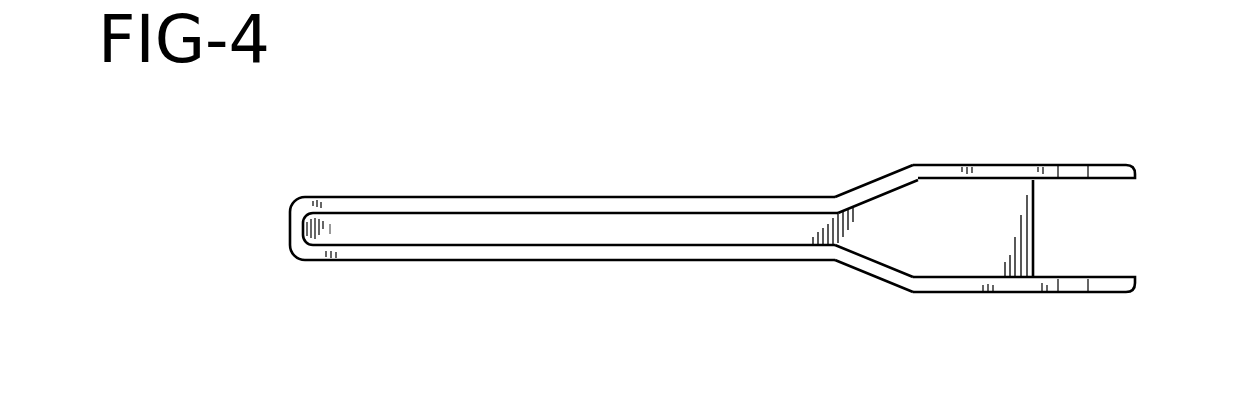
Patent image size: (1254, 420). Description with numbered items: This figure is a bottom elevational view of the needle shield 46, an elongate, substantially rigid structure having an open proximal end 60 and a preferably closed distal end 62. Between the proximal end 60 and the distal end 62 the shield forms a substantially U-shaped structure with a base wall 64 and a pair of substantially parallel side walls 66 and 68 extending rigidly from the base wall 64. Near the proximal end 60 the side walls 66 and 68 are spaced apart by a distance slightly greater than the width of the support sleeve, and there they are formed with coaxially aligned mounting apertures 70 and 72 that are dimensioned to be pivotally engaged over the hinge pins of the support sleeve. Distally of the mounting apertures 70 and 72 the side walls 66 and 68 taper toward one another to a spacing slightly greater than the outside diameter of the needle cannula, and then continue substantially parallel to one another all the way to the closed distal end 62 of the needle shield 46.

The needle shield 46 is at (397, 188).
The open proximal end 60 is at (1135, 177).
The closed distal end 62 is at (288, 230).
The base wall 64 is at (415, 228).
The side wall 66 is at (573, 262).
The side wall 68 is at (592, 197).
The mounting aperture 70 is at (1075, 280).
The mounting aperture 72 is at (1068, 158).